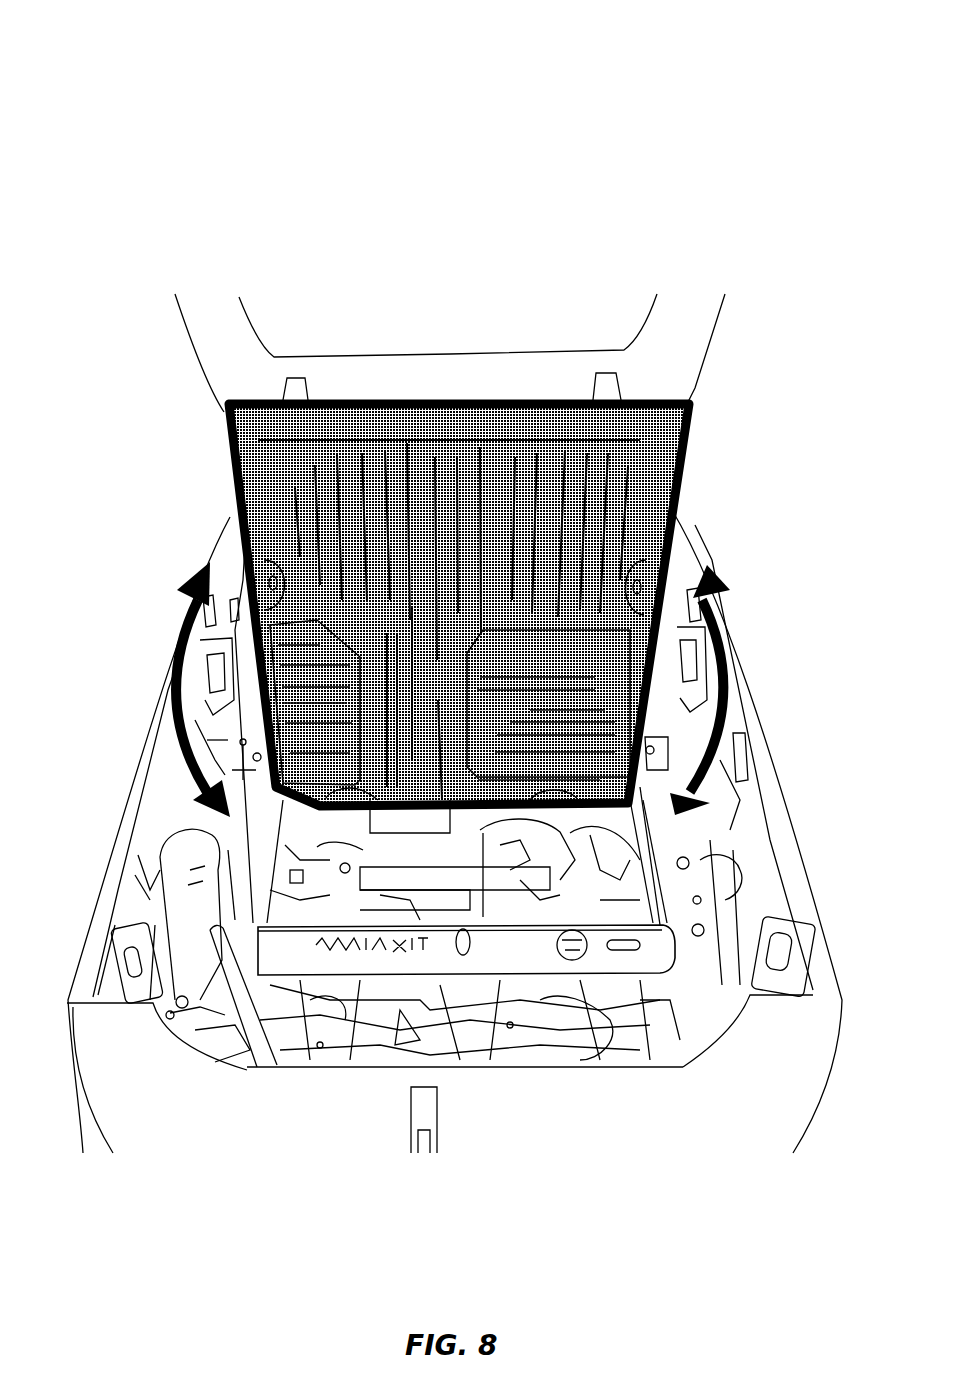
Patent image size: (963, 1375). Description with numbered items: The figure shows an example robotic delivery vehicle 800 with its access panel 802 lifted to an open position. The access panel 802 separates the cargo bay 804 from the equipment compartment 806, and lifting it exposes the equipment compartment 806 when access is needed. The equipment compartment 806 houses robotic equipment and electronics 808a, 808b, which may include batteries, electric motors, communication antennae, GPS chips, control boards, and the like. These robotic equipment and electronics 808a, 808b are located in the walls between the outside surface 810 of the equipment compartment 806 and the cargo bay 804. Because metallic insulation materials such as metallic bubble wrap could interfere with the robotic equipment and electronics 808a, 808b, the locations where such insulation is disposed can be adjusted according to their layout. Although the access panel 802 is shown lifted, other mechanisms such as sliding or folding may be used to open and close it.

The robotic delivery vehicle 800 is at (90, 78).
The access panel 802 is at (676, 496).
The cargo bay 804 is at (762, 889).
The equipment compartment 806 is at (224, 1042).
The robotic equipment and electronics 808a is at (128, 848).
The robotic equipment and electronics 808b is at (580, 1045).
The outside surface 810 is at (128, 768).